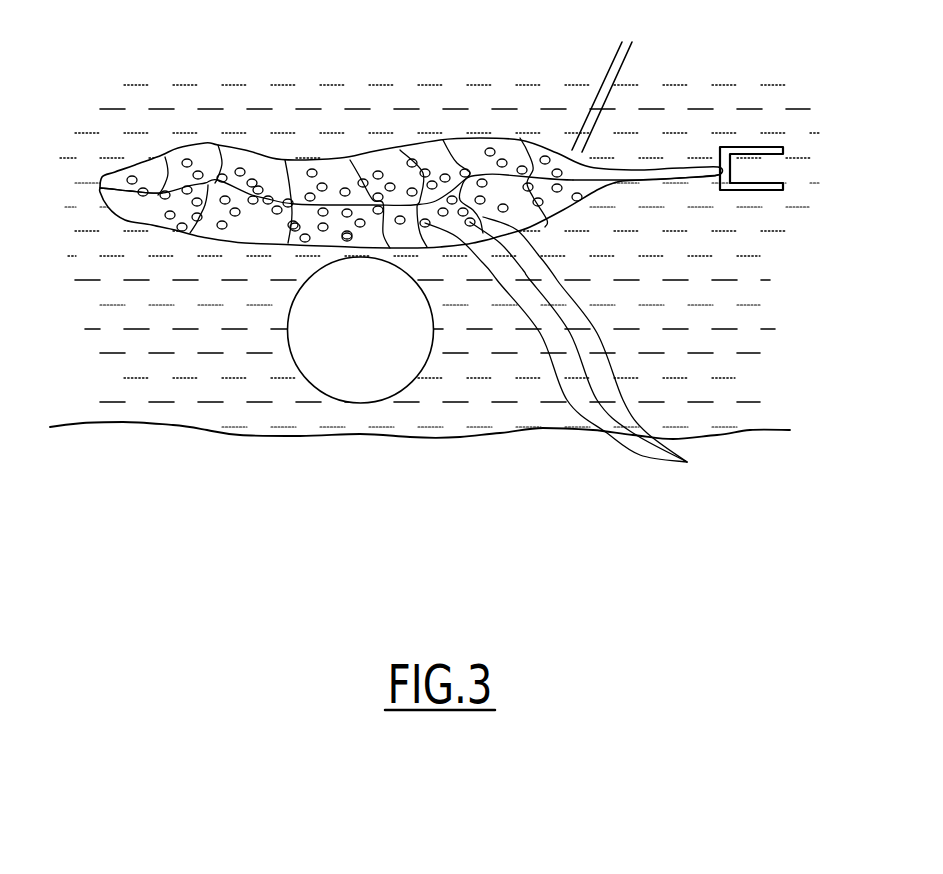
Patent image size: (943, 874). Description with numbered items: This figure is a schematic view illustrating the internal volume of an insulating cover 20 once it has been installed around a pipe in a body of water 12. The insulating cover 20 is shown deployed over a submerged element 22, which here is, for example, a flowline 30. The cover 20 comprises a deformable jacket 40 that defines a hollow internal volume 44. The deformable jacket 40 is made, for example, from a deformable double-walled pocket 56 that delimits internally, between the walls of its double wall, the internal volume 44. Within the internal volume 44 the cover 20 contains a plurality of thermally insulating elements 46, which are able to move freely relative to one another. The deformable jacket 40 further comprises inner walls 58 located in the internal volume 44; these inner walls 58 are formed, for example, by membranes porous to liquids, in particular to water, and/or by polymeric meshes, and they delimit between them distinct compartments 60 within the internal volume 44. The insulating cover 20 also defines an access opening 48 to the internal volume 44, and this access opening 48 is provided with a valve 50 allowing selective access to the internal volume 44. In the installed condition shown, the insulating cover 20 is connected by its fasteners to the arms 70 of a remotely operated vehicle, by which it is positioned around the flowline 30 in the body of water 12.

The body of water 12 is at (100, 376).
The insulating cover 20 is at (442, 243).
The submerged element 22 is at (480, 354).
The flowline 30 is at (412, 383).
The deformable jacket 40 is at (457, 122).
The internal volume 44 is at (547, 233).
The thermally insulating elements 46 is at (572, 347).
The access opening 48 is at (647, 165).
The valve 50 is at (750, 147).
The deformable double-walled pocket 56 is at (147, 160).
The inner walls 58 is at (210, 153).
The compartments 60 is at (323, 167).
The arms 70 is at (620, 83).